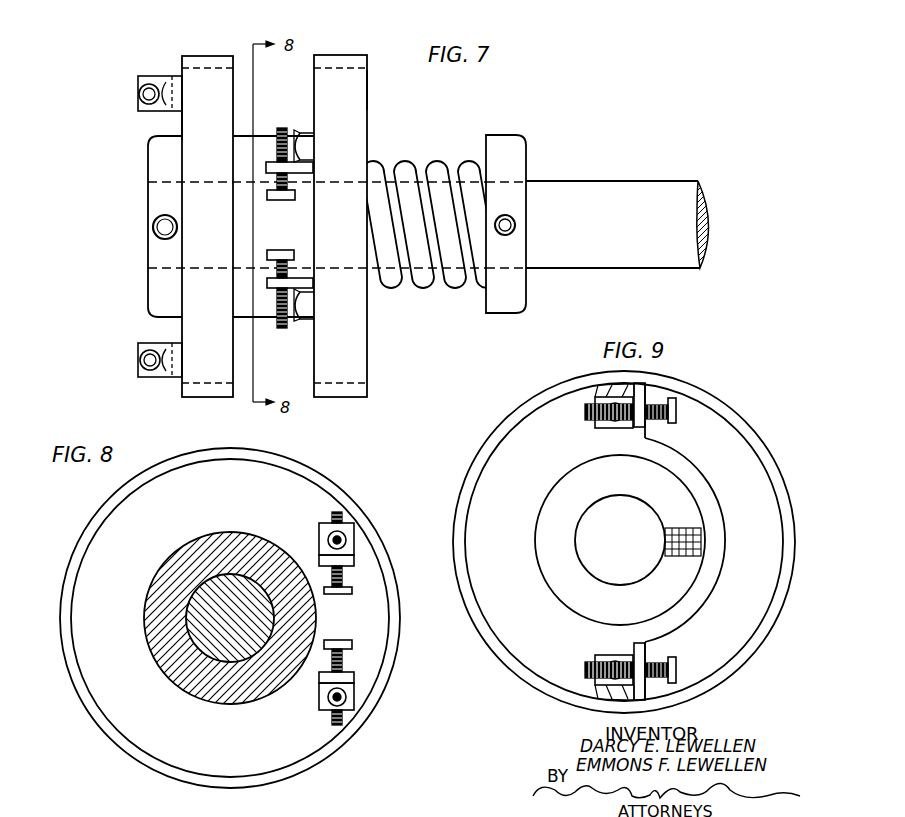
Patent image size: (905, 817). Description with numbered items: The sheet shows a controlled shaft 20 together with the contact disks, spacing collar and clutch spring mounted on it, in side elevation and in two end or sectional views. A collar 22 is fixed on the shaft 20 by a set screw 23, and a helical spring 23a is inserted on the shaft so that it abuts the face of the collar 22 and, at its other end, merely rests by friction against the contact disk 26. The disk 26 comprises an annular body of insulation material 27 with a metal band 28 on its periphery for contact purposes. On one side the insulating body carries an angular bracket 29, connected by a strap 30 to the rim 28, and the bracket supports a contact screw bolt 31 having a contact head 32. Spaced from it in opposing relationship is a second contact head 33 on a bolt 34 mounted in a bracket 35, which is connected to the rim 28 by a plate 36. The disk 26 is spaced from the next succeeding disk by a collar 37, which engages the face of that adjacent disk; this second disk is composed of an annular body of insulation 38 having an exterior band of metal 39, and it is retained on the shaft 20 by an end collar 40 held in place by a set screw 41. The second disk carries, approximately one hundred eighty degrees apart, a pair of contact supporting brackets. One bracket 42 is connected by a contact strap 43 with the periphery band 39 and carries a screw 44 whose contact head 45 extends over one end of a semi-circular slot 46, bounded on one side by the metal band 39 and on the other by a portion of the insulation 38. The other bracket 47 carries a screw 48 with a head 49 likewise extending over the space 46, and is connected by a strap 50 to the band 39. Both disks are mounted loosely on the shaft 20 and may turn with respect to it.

In FIG. 7, the controlled shaft 20 is at (645, 193).
In FIG. 8, the controlled shaft 20 is at (205, 630).
In FIG. 9, the controlled shaft 20 is at (590, 532).
In FIG. 7, the collar 22 is at (518, 161).
In FIG. 7, the set screw 23 is at (514, 222).
In FIG. 7, the helical spring 23a is at (438, 161).
In FIG. 7, the contact disk 26 is at (368, 90).
In FIG. 7, the annular body of insulation material 27 is at (355, 121).
In FIG. 8, the annular body of insulation material 27 is at (110, 540).
In FIG. 7, the metal band 28 is at (347, 55).
In FIG. 8, the metal band 28 is at (100, 505).
In FIG. 7, the angular bracket 29 is at (300, 168).
In FIG. 8, the angular bracket 29 is at (355, 560).
In FIG. 7, the strap 30 is at (304, 146).
In FIG. 8, the strap 30 is at (360, 541).
In FIG. 7, the contact screw bolt 31 is at (281, 128).
In FIG. 8, the contact screw bolt 31 is at (330, 517).
In FIG. 7, the contact head 32 is at (297, 196).
In FIG. 8, the contact head 32 is at (353, 591).
In FIG. 7, the second contact head 33 is at (294, 254).
In FIG. 8, the second contact head 33 is at (353, 645).
In FIG. 7, the bolt 34 is at (282, 328).
In FIG. 8, the bolt 34 is at (330, 722).
In FIG. 7, the bracket 35 is at (300, 281).
In FIG. 8, the bracket 35 is at (355, 674).
In FIG. 7, the plate 36 is at (304, 305).
In FIG. 8, the plate 36 is at (360, 699).
In FIG. 7, the collar 37 is at (260, 143).
In FIG. 8, the collar 37 is at (165, 587).
In FIG. 7, the annular body of insulation 38 is at (182, 118).
In FIG. 9, the annular body of insulation 38 is at (520, 428).
In FIG. 7, the exterior band of metal 39 is at (210, 56).
In FIG. 9, the exterior band of metal 39 is at (530, 398).
In FIG. 7, the end collar 40 is at (155, 192).
In FIG. 9, the end collar 40 is at (563, 490).
In FIG. 7, the set screw 41 is at (153, 227).
In FIG. 9, the set screw 41 is at (705, 542).
In FIG. 7, the contact supporting bracket 42 is at (147, 76).
In FIG. 9, the contact supporting bracket 42 is at (638, 426).
In FIG. 9, the contact strap 43 is at (620, 396).
In FIG. 9, the screw 44 is at (588, 419).
In FIG. 7, the contact head 45 is at (141, 93).
In FIG. 9, the contact head 45 is at (678, 414).
In FIG. 9, the semi-circular slot 46 is at (737, 454).
In FIG. 7, the bracket 47 is at (155, 344).
In FIG. 9, the bracket 47 is at (612, 656).
In FIG. 9, the screw 48 is at (590, 663).
In FIG. 7, the head 49 is at (140, 360).
In FIG. 9, the head 49 is at (675, 668).
In FIG. 9, the strap 50 is at (597, 690).